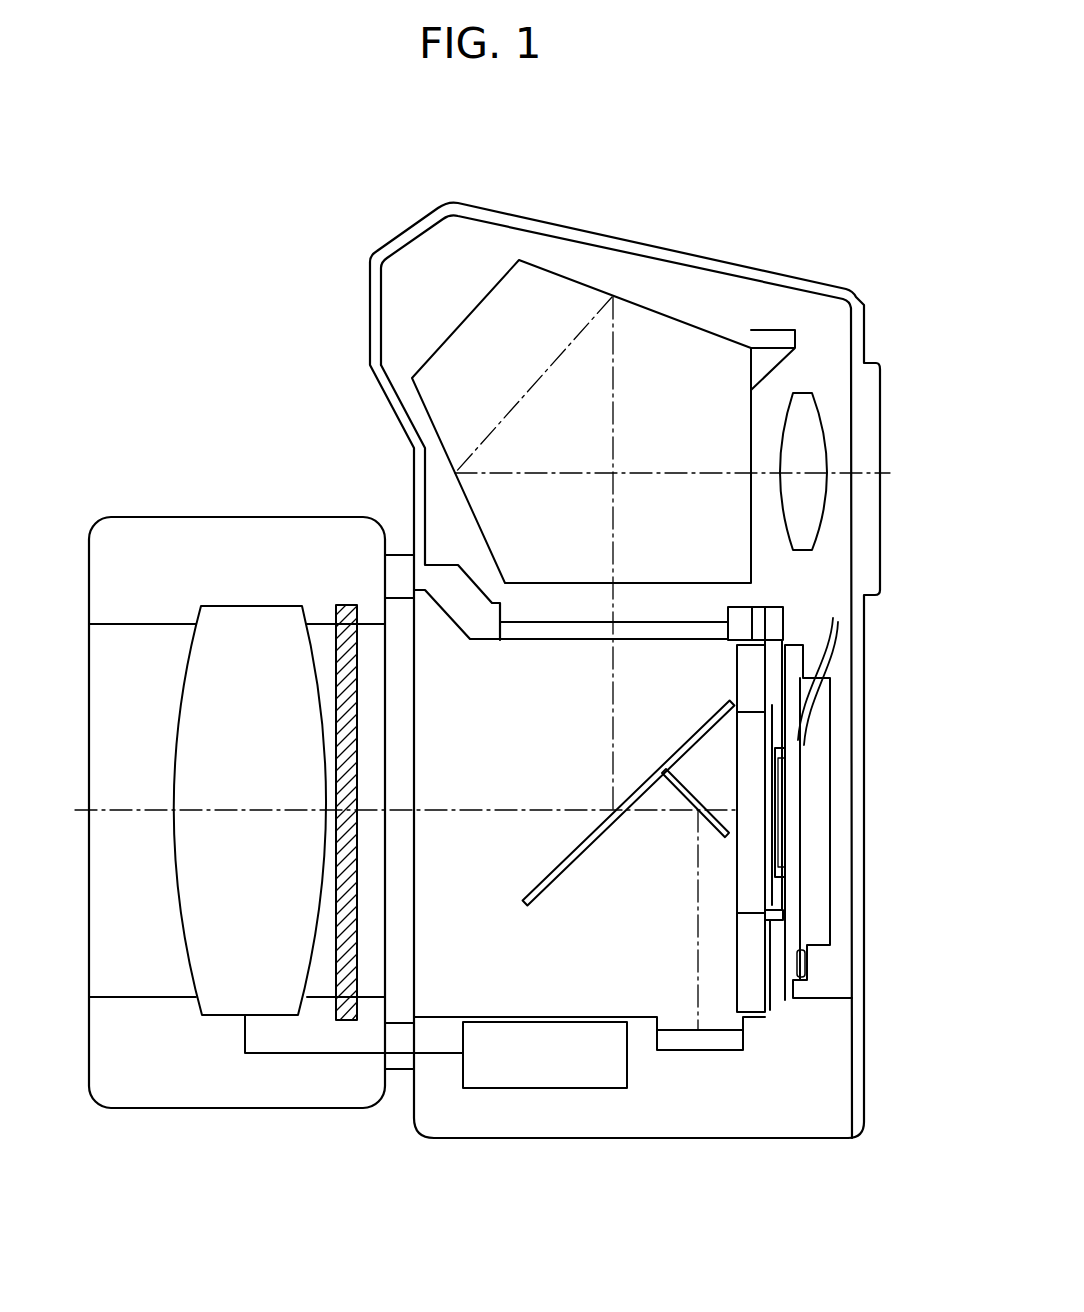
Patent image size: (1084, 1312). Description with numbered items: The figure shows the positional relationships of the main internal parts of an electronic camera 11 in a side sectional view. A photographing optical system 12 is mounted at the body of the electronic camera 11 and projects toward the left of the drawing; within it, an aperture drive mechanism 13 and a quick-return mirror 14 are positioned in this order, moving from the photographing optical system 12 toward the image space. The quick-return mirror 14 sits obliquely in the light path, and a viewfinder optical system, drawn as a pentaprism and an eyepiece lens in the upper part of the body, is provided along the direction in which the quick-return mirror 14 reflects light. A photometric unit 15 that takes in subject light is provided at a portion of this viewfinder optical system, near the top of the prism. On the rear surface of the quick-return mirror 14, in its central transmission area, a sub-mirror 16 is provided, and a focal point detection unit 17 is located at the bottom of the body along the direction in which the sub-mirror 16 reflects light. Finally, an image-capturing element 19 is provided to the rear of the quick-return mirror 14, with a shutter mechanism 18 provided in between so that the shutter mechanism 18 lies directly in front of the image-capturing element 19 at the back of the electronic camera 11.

The electronic camera 11 is at (450, 201).
The photographing optical system 12 is at (138, 516).
The aperture drive mechanism 13 is at (343, 605).
The quick-return mirror 14 is at (529, 907).
The photometric unit 15 is at (768, 330).
The sub-mirror 16 is at (690, 806).
The focal point detection unit 17 is at (702, 1051).
The shutter mechanism 18 is at (766, 1012).
The image-capturing element 19 is at (777, 830).